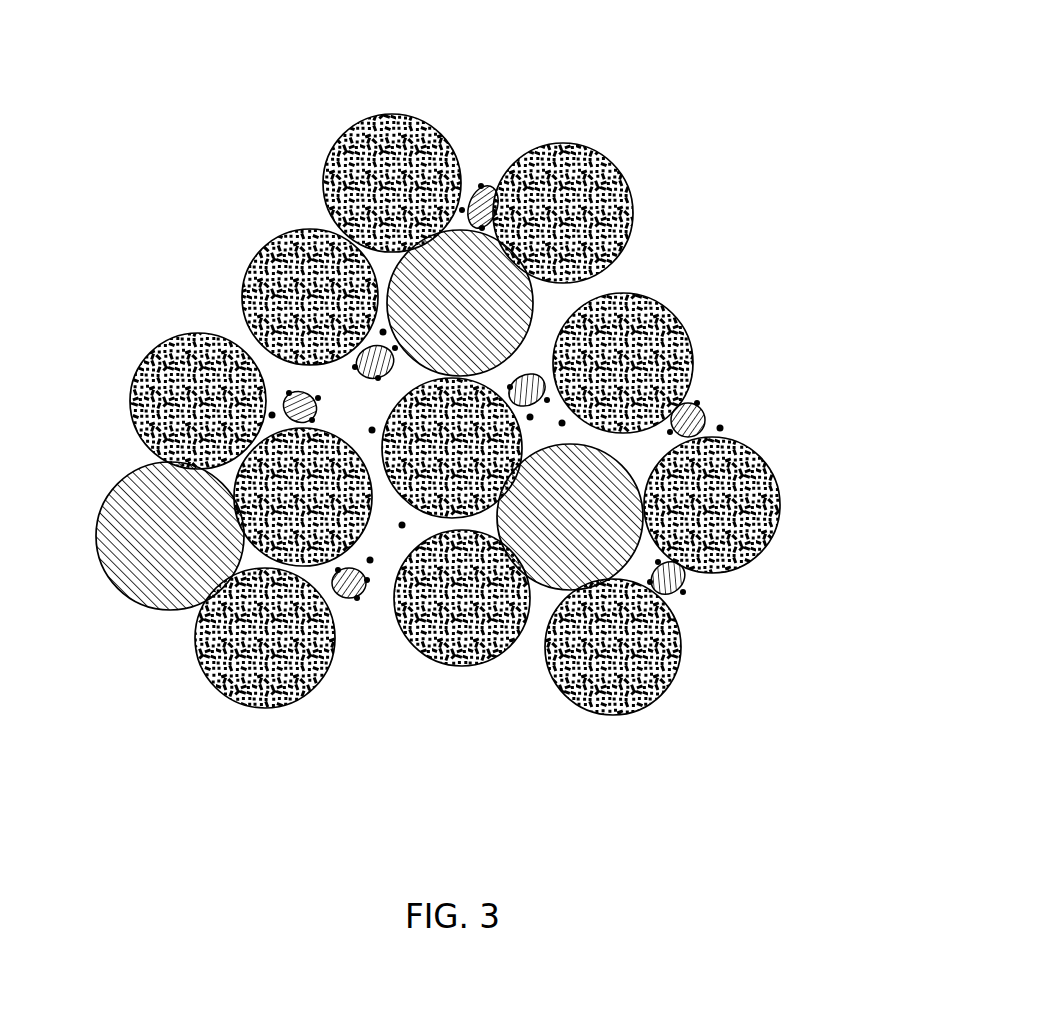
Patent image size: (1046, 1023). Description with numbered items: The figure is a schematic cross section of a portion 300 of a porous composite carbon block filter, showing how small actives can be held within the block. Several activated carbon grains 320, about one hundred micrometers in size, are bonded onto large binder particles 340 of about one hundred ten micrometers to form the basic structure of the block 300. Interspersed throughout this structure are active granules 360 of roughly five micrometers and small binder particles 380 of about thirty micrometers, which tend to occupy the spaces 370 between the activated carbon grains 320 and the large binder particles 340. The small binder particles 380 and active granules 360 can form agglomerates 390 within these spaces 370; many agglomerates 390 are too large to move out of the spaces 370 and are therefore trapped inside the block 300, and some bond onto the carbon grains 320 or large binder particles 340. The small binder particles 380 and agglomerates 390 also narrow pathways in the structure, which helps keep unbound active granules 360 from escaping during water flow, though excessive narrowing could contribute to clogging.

The portion of porous carbon block structure 300 is at (207, 171).
The activated carbon grains 320 is at (407, 153).
The large binder particles 340 is at (497, 327).
The active granules 360 is at (682, 593).
The spaces 370 is at (343, 407).
The small binder particles 380 is at (707, 420).
The agglomerates 390 is at (348, 622).